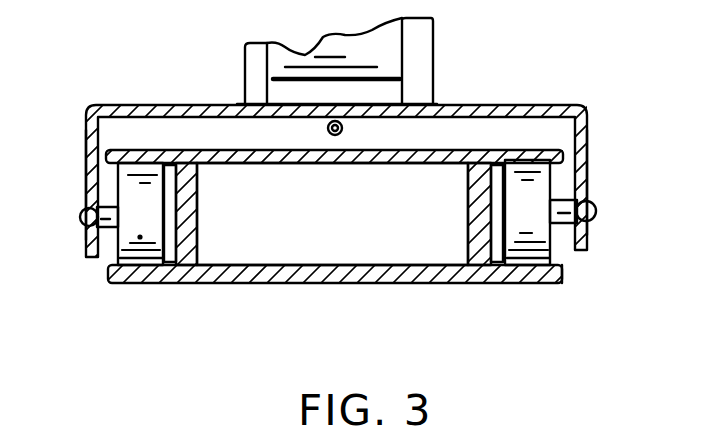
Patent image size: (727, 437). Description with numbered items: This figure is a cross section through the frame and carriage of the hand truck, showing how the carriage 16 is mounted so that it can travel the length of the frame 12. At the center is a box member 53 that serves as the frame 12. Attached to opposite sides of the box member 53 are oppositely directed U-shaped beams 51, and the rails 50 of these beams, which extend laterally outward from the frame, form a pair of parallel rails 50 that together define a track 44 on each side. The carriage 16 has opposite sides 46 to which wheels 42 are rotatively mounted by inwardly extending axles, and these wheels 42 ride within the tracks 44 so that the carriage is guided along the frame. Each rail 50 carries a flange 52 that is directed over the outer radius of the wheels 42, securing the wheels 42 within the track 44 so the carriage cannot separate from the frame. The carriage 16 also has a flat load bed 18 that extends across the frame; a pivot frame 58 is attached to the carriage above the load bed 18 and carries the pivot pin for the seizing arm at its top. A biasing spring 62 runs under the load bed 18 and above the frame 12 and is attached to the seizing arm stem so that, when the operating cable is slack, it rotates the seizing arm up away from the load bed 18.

The frame 12 is at (285, 297).
The carriage 16 is at (86, 125).
The load bed 18 is at (152, 107).
The wheels 42 is at (152, 222).
The tracks 44 is at (113, 250).
The carriage sides 46 is at (86, 176).
The rails 50 is at (132, 150).
The U-shaped beams 51 is at (175, 133).
The flange 52 is at (558, 268).
The box member 53 is at (373, 283).
The pivot frame 58 is at (422, 43).
The biasing spring 62 is at (340, 134).